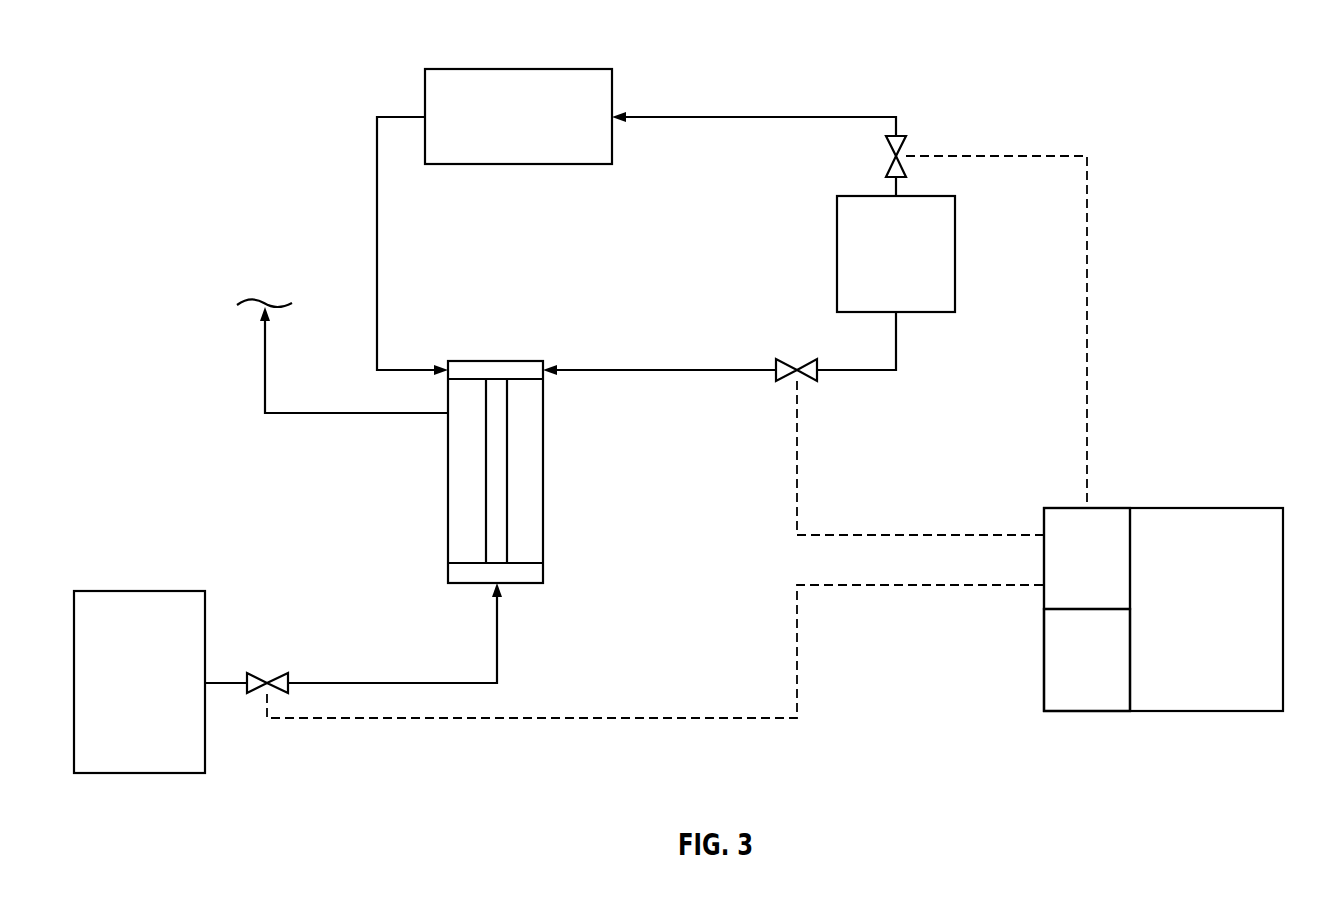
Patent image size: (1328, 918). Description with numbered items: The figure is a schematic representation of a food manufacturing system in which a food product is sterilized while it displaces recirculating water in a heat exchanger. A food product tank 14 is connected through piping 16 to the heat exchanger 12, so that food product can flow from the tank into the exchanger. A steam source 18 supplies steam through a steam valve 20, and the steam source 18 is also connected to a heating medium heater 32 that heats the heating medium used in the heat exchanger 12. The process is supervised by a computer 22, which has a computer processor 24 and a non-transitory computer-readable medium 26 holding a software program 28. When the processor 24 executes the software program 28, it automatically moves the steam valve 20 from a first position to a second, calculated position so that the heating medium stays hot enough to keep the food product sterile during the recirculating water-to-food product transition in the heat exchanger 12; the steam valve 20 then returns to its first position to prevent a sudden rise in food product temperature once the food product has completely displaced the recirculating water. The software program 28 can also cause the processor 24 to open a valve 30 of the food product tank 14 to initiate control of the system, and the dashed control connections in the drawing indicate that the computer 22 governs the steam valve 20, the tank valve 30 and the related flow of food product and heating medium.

The heat exchanger 12 is at (470, 360).
The food product tank 14 is at (110, 591).
The piping 16 is at (368, 682).
The steam source 18 is at (937, 196).
The steam valve 20 is at (818, 374).
The computer 22 is at (1262, 508).
The computer processor 24 is at (1064, 508).
The non-transitory computer-readable medium 26 is at (1062, 712).
The software program 28 is at (1062, 712).
The valve 30 is at (898, 136).
The heating medium heater 32 is at (470, 68).